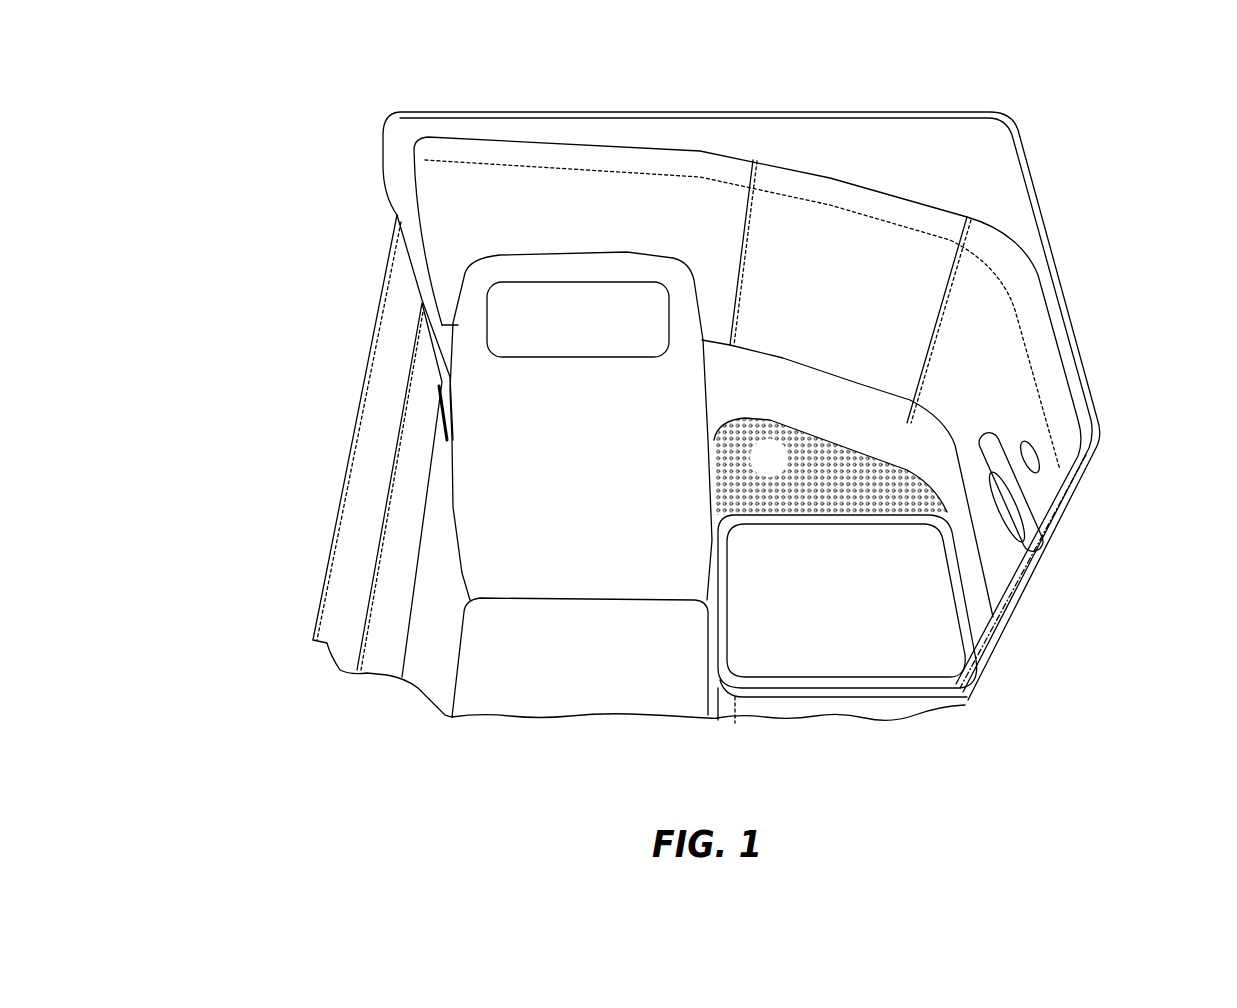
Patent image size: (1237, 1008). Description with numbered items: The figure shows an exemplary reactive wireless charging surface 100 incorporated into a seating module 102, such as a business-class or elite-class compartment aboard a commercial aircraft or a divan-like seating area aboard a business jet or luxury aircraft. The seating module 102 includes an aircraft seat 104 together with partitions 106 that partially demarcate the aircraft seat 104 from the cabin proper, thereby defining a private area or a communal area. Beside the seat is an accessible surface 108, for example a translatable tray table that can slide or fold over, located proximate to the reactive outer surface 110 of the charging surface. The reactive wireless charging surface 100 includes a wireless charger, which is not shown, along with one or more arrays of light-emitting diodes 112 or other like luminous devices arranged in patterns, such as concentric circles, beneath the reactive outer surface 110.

The reactive wireless charging surface 100 is at (245, 127).
The seating module 102 is at (963, 268).
The aircraft seat 104 is at (557, 647).
The partitions 106 is at (399, 535).
The accessible surface 108 is at (780, 648).
The reactive outer surface 110 is at (768, 467).
The light-emitting diodes 112 is at (906, 480).